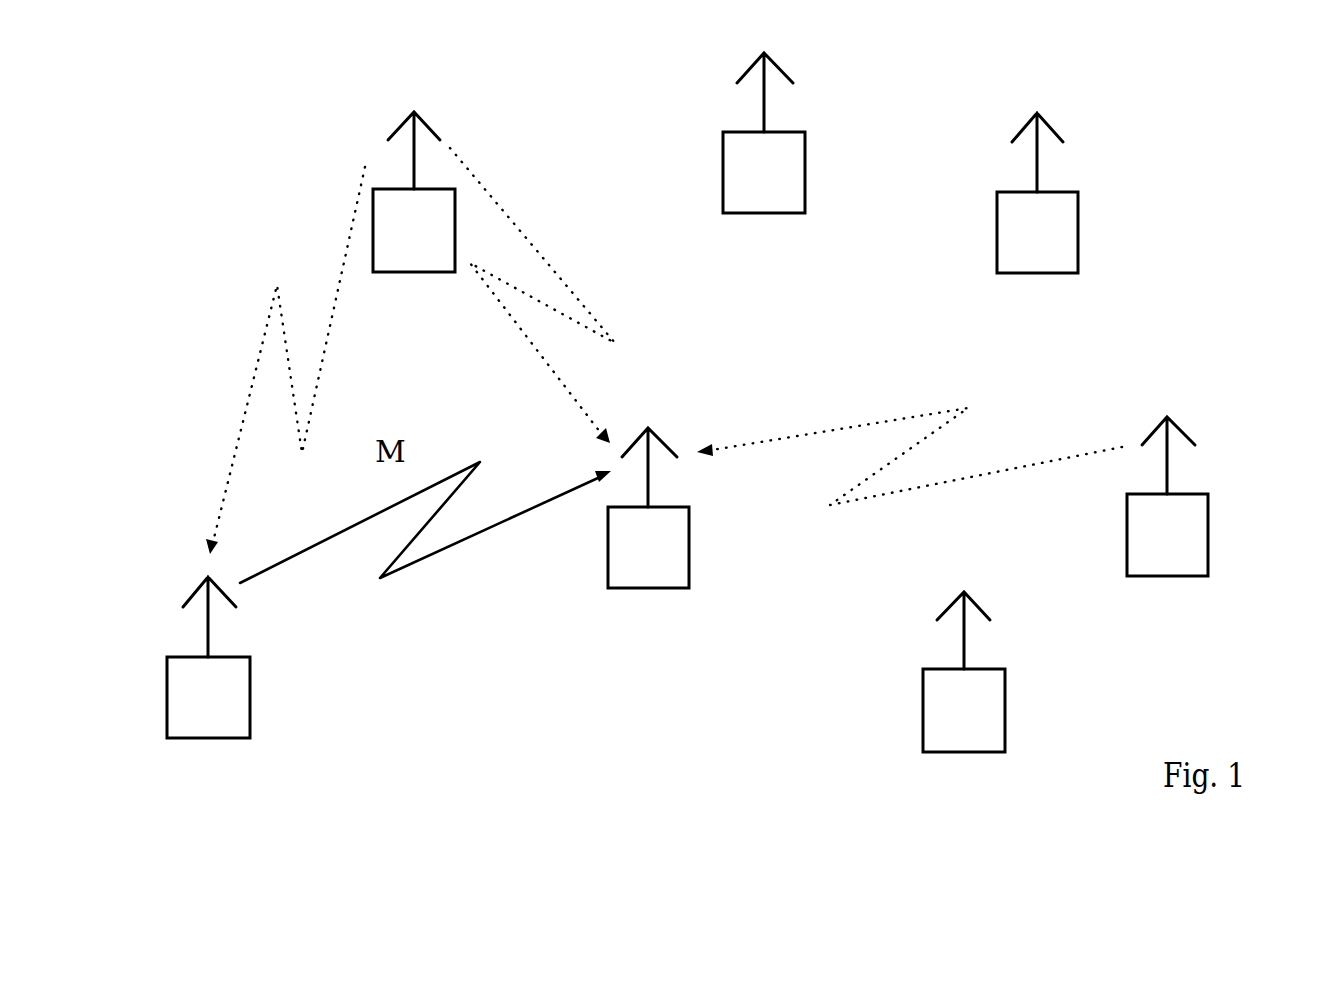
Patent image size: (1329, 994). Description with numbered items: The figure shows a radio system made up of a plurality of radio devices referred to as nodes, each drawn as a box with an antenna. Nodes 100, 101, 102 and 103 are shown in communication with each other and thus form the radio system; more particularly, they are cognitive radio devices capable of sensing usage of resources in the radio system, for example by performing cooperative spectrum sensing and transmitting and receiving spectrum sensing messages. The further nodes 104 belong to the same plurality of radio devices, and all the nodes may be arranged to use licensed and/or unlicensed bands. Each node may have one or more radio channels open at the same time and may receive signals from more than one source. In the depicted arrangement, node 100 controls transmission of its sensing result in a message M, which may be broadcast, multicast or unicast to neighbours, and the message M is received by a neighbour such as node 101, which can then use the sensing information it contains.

The radio device (node) 100 is at (236, 725).
The radio device (node) 101 is at (683, 573).
The radio device (node) 102 is at (1197, 554).
The radio device (node) 103 is at (417, 265).
The radio device (node) 104 is at (1015, 218).